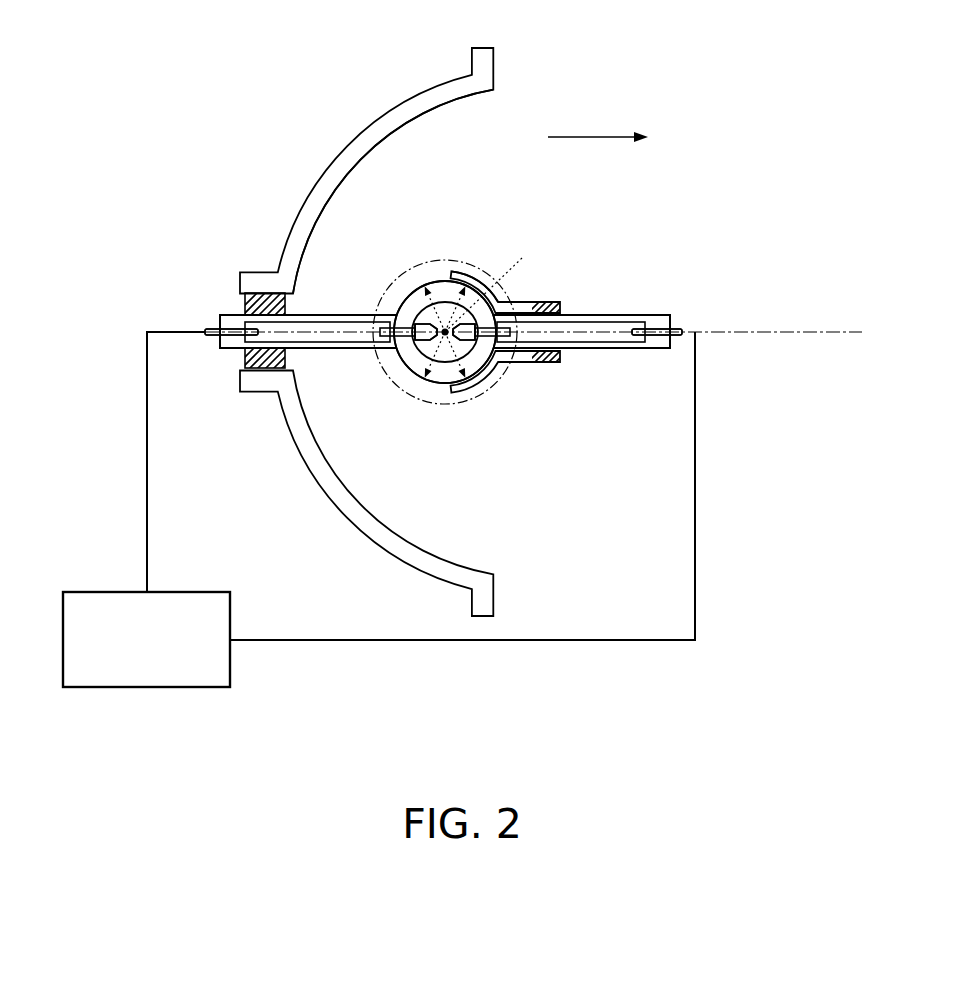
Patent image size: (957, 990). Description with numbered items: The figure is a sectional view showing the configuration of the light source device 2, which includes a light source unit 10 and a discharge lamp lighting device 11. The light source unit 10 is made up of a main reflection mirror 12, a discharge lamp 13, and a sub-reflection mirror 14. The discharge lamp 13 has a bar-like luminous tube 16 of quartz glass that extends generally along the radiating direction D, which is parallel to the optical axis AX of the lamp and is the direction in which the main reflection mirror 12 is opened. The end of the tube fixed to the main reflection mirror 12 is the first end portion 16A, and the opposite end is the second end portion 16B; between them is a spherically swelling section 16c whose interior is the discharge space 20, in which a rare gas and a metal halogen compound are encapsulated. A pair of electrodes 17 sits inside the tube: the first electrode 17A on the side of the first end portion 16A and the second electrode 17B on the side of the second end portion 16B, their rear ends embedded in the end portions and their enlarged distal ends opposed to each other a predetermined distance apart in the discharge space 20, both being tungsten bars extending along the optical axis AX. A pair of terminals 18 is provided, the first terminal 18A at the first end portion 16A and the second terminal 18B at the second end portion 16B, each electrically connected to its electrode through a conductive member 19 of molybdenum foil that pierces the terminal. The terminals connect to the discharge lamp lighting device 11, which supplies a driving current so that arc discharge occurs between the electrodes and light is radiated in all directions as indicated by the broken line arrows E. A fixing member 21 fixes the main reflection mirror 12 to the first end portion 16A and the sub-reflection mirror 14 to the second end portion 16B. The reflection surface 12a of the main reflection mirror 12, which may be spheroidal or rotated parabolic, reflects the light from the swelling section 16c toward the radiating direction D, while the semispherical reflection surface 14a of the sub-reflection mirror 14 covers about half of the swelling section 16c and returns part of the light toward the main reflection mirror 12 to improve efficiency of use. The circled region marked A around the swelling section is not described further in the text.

The light source device 2 is at (713, 154).
The light source unit 10 is at (280, 139).
The discharge lamp lighting device 11 is at (180, 591).
The main reflection mirror 12 is at (374, 124).
The reflection surface 12a is at (421, 118).
The discharge lamp 13 is at (444, 262).
The sub-reflection mirror 14 is at (471, 285).
The reflection surface 14a is at (487, 296).
The luminous tube 16 is at (616, 305).
The first end portion 16A is at (222, 314).
The second end portion 16B is at (670, 314).
The swelling section 16c is at (429, 286).
The pair of electrodes 17 is at (412, 346).
The first electrode 17A is at (412, 346).
The second electrode 17B is at (476, 338).
The pair of terminals 18 is at (211, 337).
The first terminal 18A is at (211, 337).
The second terminal 18B is at (680, 337).
The conductive member 19 is at (340, 343).
The discharge space 20 is at (445, 357).
The fixing member 21 is at (246, 300).
The region A is at (382, 297).
The radiating direction D is at (610, 138).
The broken line arrows E is at (493, 283).
The optical axis AX is at (795, 331).